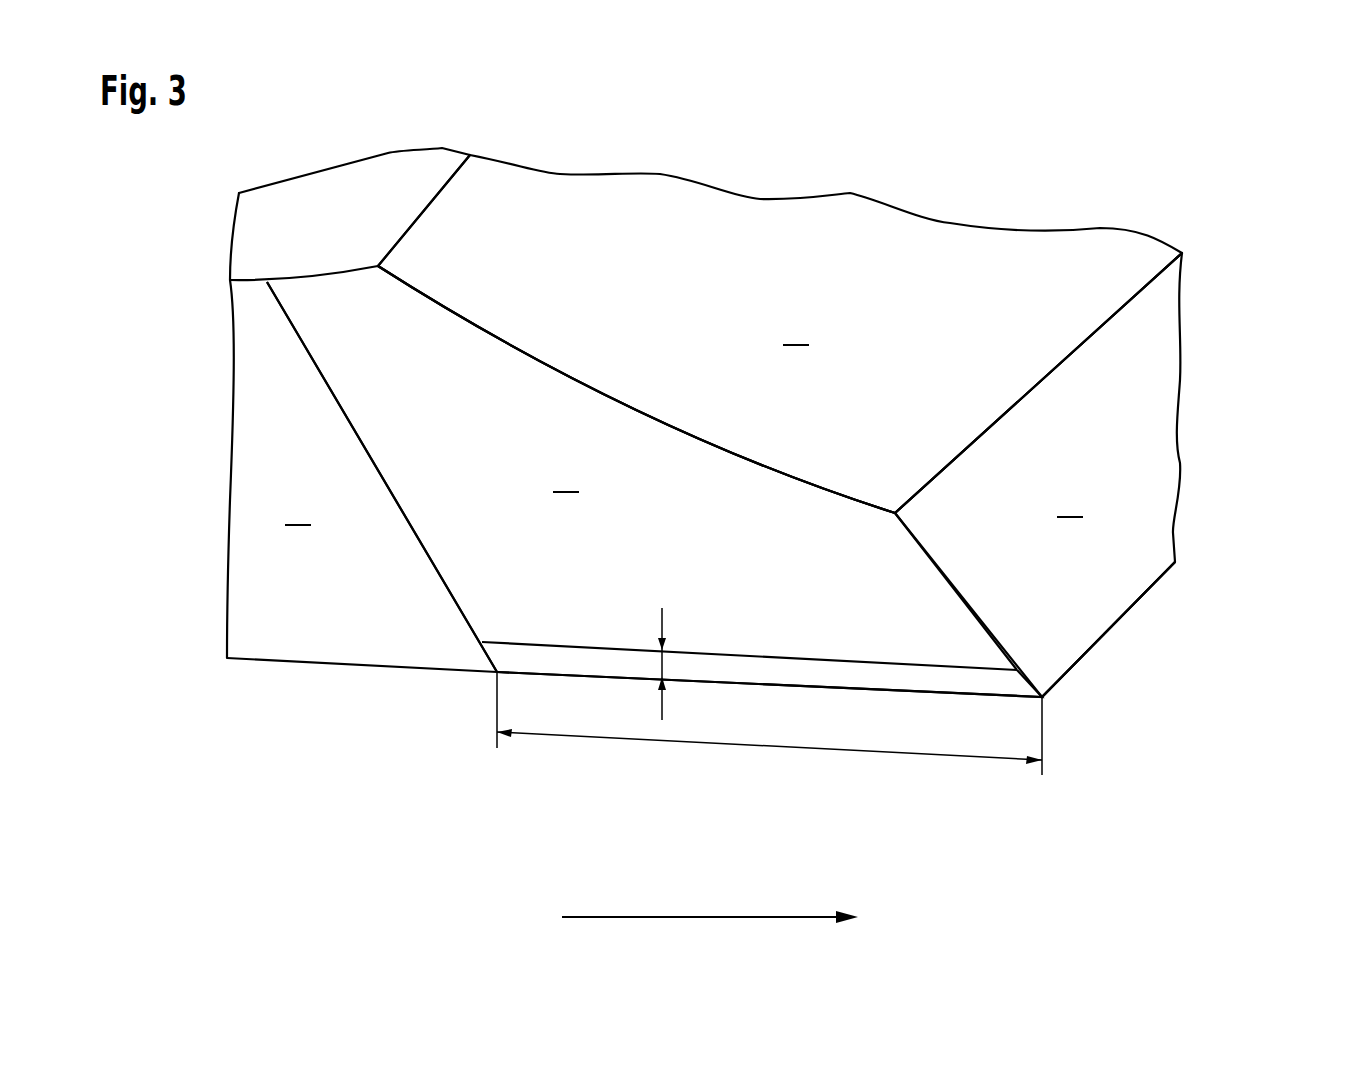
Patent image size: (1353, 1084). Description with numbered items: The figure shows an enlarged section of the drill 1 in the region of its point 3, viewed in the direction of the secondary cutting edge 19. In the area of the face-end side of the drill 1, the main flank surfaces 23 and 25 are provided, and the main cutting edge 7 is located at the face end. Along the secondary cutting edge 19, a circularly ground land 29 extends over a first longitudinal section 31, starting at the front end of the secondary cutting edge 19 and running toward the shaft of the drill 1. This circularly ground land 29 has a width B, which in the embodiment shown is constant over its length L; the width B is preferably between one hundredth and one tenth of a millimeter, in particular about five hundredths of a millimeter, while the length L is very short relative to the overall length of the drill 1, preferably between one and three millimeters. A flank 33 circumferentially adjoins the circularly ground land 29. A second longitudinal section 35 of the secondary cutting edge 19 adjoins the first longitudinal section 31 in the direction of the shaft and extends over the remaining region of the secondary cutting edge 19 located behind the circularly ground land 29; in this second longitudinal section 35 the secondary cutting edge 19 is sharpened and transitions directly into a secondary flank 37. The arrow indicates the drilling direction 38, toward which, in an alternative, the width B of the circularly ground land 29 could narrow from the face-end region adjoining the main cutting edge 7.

The drill 1 is at (800, 150).
The point 3 is at (1266, 692).
The main cutting edge 7 is at (1130, 613).
The secondary cutting edge 19 is at (582, 678).
The main flank surface 23 is at (1038, 475).
The main flank surface 25 is at (780, 334).
The circularly ground land 29 is at (745, 686).
The first longitudinal section 31 is at (857, 718).
The flank 33 is at (642, 469).
The second longitudinal section 35 is at (303, 696).
The secondary flank 37 is at (382, 477).
The drilling direction 38 is at (720, 915).
The width of the circularly ground land B is at (658, 665).
The length of the first longitudinal section L is at (797, 750).